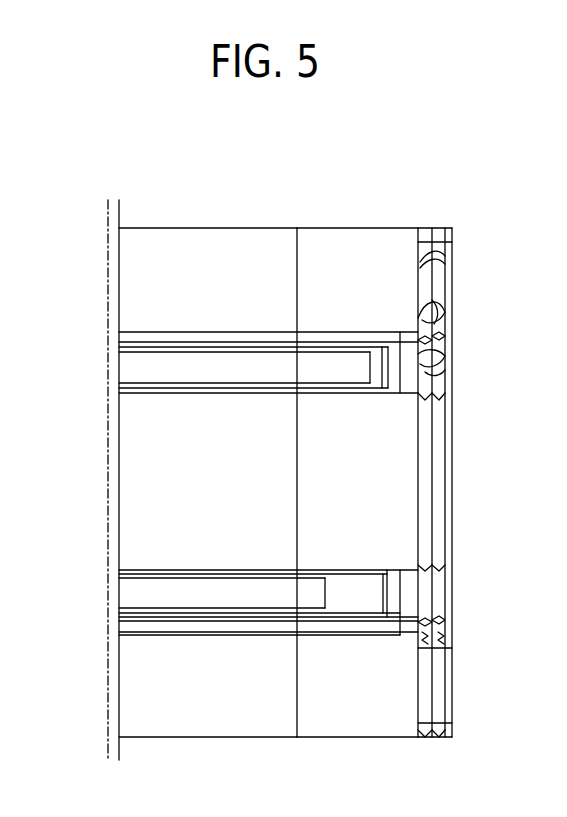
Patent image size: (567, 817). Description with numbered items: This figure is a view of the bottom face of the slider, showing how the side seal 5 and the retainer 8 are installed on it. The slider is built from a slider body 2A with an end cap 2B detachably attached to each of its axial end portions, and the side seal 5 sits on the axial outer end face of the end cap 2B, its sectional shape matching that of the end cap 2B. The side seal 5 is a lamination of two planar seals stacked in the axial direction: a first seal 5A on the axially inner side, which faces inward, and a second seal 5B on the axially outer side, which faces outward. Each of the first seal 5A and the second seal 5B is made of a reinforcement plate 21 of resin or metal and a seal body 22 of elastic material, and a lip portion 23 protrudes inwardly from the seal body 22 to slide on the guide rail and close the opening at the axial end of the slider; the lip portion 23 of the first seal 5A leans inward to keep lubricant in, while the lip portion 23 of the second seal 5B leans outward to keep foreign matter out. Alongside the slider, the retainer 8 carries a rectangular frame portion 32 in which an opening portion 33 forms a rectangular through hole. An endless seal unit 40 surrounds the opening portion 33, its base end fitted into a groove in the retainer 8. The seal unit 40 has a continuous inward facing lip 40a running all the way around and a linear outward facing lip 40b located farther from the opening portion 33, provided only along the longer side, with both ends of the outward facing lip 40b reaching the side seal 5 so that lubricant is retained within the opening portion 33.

The side seal 5 is at (458, 421).
The first seal 5A is at (428, 228).
The second seal 5B is at (442, 228).
The slider body 2A is at (198, 240).
The end cap 2B is at (346, 240).
The reinforcement plate 21 is at (435, 252).
The seal body 22 is at (430, 302).
The lip portion 23 is at (440, 374).
The endless seal unit 40 is at (392, 596).
The inward facing lip 40a is at (176, 568).
The outward facing lip 40b is at (176, 618).
The opening portion 33 is at (320, 602).
The rectangular frame portion 32 is at (357, 598).
The retainer 8 is at (375, 627).